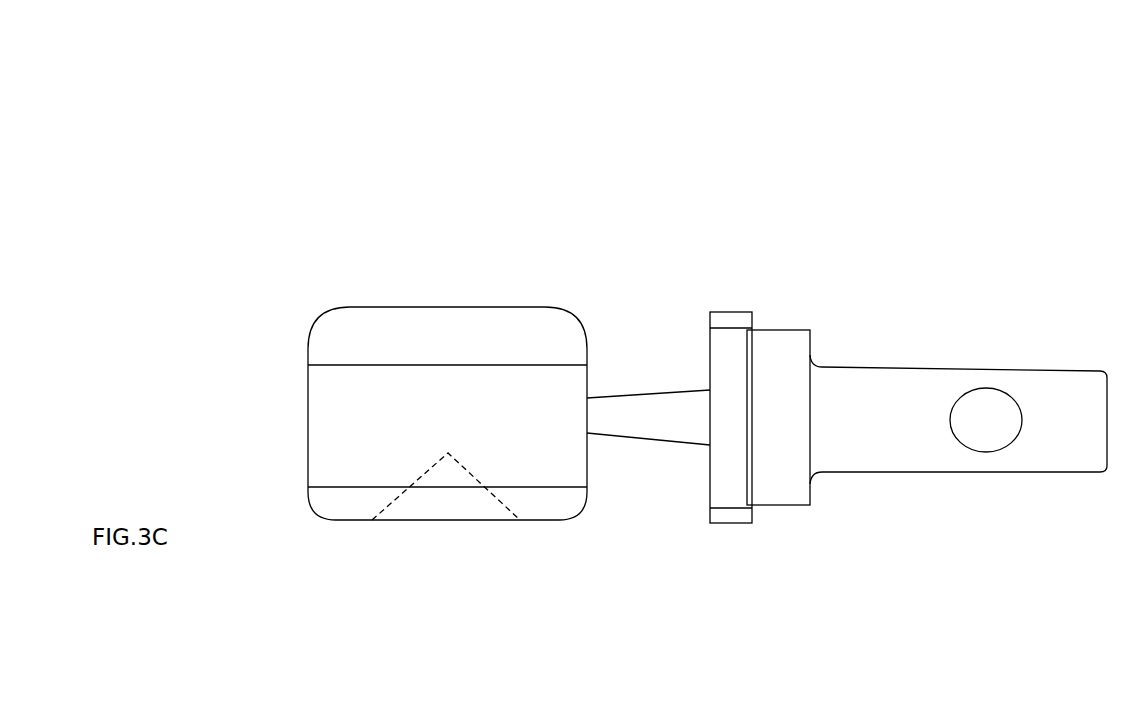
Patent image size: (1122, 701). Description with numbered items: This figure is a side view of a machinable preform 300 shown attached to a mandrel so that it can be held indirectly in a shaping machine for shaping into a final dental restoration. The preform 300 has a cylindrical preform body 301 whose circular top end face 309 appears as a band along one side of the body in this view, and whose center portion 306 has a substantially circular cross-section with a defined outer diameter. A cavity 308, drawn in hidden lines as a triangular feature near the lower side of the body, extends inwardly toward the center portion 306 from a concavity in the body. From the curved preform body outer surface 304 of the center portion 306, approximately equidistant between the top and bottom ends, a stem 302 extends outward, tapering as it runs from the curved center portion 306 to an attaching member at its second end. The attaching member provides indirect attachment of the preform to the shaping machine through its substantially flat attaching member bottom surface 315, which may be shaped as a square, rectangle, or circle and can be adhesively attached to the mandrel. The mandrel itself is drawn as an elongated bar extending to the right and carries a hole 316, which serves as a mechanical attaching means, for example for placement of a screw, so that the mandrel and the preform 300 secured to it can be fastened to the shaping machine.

The preform 300 is at (812, 165).
The cylindrical preform body 301 is at (318, 325).
The stem 302 is at (602, 397).
The curved preform body outer surface 304 is at (583, 408).
The center portion 306 is at (360, 436).
The cavity 308 is at (447, 463).
The top end face 309 is at (438, 327).
The attaching member bottom surface 315 is at (748, 335).
The hole 316 is at (991, 408).